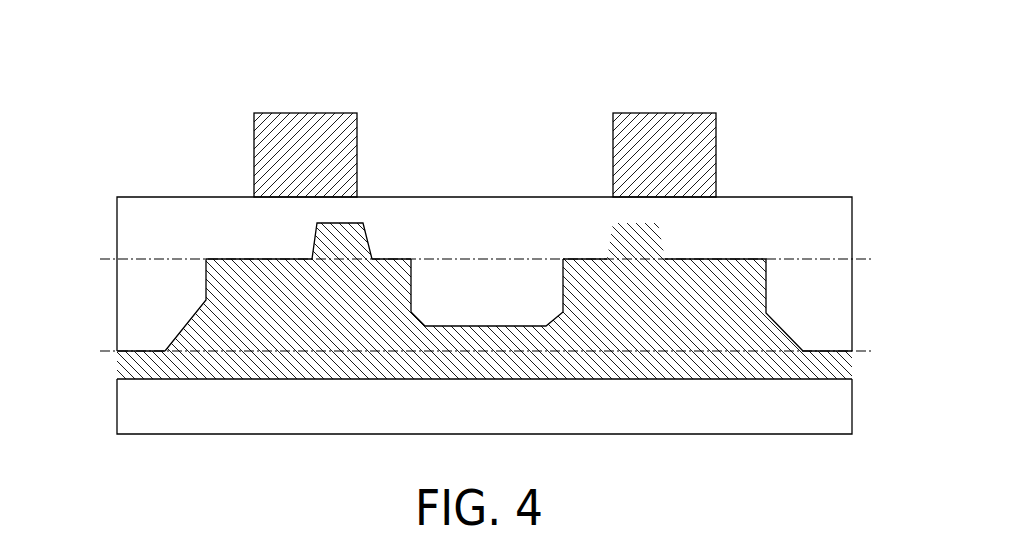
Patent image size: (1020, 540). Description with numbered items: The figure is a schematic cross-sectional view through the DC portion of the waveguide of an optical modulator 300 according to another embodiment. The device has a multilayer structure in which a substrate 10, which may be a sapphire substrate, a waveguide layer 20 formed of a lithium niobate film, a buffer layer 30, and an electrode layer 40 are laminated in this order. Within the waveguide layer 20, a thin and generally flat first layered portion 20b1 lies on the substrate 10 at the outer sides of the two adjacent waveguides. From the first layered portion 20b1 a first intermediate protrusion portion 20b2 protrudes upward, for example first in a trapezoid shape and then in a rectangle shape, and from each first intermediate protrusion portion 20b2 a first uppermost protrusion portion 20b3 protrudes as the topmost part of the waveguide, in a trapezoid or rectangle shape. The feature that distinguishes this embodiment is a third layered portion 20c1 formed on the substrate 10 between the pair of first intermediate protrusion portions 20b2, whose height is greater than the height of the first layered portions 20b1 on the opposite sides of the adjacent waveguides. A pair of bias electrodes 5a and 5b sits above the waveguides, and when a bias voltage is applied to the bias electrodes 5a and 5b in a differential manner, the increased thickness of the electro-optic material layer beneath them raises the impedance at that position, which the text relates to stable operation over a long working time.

The optical modulator 300 is at (913, 47).
The substrate 10 is at (835, 409).
The waveguide layer 20 is at (828, 363).
The first layered portion 20b1 is at (165, 360).
The first intermediate protrusion portion 20b2 is at (297, 307).
The first uppermost protrusion portion 20b3 is at (313, 247).
The third layered portion 20c1 is at (468, 340).
The buffer layer 30 is at (822, 285).
The electrode layer 40 is at (807, 152).
The bias electrode 5a is at (303, 113).
The bias electrode 5b is at (663, 113).